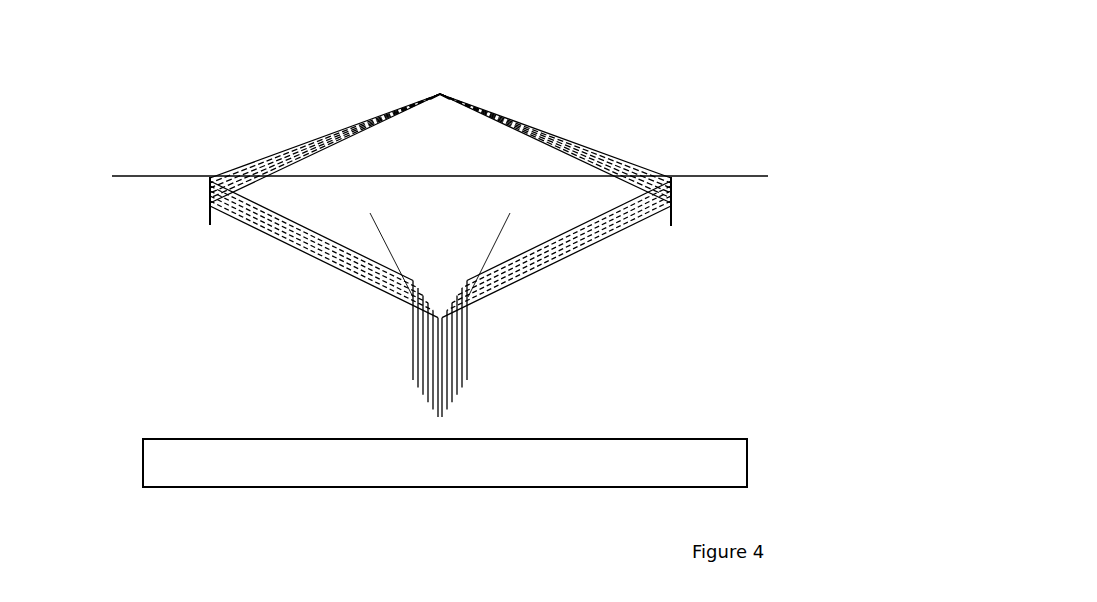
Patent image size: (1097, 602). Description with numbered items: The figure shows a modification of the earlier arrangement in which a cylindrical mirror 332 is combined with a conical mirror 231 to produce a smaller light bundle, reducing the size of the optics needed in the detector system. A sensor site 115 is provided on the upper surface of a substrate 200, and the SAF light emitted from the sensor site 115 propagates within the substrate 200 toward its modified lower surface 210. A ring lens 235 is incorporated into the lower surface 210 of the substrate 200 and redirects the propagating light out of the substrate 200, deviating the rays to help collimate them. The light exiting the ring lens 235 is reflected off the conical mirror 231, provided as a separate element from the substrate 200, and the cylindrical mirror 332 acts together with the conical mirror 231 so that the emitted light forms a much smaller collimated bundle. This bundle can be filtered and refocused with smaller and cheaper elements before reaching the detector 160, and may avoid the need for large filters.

The sensor site 115 is at (416, 76).
The substrate 200 is at (168, 142).
The lower surface 210 is at (761, 182).
The conical mirror 231 is at (202, 210).
The ring lens 235 is at (657, 145).
The cylindrical mirror 332 is at (398, 261).
The detector 160 is at (747, 463).